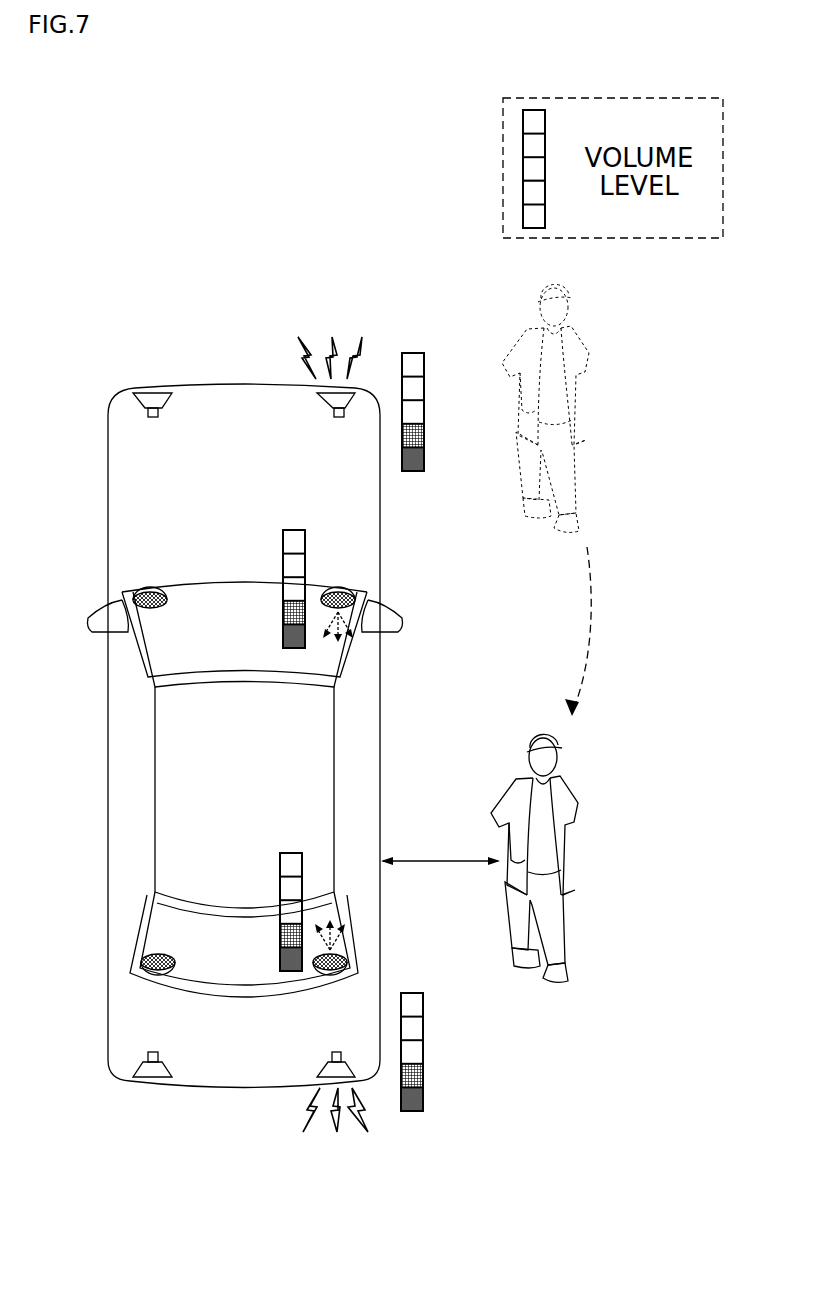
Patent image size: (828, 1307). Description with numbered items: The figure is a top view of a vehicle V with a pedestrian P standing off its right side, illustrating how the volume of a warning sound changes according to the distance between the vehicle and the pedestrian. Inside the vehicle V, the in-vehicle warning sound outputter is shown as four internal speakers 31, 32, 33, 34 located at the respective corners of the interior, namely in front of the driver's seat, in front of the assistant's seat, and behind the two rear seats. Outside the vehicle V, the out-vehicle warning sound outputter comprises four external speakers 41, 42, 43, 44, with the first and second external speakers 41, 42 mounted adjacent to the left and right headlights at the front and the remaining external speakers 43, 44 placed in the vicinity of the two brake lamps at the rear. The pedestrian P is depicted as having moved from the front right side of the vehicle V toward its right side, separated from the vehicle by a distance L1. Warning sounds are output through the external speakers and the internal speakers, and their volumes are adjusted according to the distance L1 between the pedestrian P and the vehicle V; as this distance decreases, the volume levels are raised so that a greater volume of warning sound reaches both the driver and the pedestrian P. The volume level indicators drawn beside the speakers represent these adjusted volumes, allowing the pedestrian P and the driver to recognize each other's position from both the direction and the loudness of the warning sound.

The internal speaker 31 is at (143, 590).
The internal speaker 32 is at (343, 588).
The internal speaker 33 is at (333, 975).
The internal speaker 34 is at (157, 975).
The first external speaker 41 is at (160, 408).
The second external speaker 42 is at (323, 407).
The external speaker 43 is at (323, 1062).
The external speaker 44 is at (162, 1062).
The vehicle V is at (108, 766).
The pedestrian P is at (578, 808).
The distance between the pedestrian and the vehicle L1 is at (440, 848).